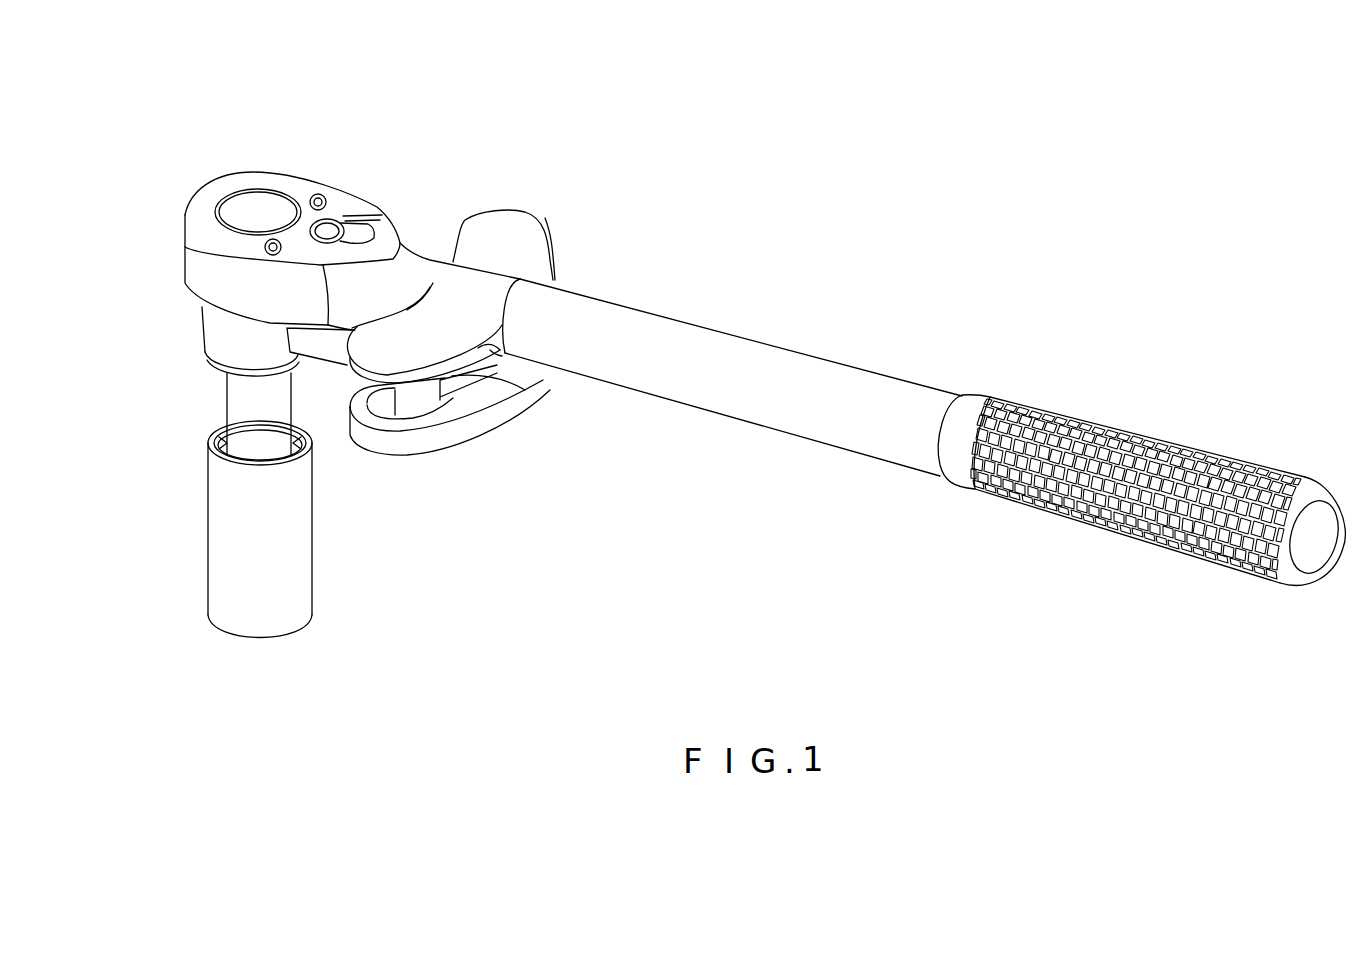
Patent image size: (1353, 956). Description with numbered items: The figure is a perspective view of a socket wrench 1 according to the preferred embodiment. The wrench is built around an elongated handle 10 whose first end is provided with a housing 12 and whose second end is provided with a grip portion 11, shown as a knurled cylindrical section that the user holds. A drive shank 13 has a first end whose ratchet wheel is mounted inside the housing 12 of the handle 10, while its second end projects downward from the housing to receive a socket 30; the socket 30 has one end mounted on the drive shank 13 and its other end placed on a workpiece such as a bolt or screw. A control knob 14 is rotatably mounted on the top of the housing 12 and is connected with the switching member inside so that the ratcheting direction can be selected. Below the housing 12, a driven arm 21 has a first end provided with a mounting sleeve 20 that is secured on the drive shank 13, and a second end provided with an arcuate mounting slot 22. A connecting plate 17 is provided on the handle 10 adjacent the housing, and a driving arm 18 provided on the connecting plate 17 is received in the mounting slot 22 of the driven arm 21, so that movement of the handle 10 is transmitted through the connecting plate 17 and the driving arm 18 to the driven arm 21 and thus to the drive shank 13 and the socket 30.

The socket wrench 1 is at (297, 143).
The handle 10 is at (741, 350).
The grip portion 11 is at (1105, 420).
The housing 12 is at (190, 256).
The drive shank 13 is at (243, 438).
The control knob 14 is at (338, 228).
The connecting plate 17 is at (505, 238).
The driving arm 18 is at (417, 398).
The mounting sleeve 20 is at (215, 333).
The driven arm 21 is at (330, 353).
The mounting slot 22 is at (472, 383).
The socket 30 is at (222, 530).